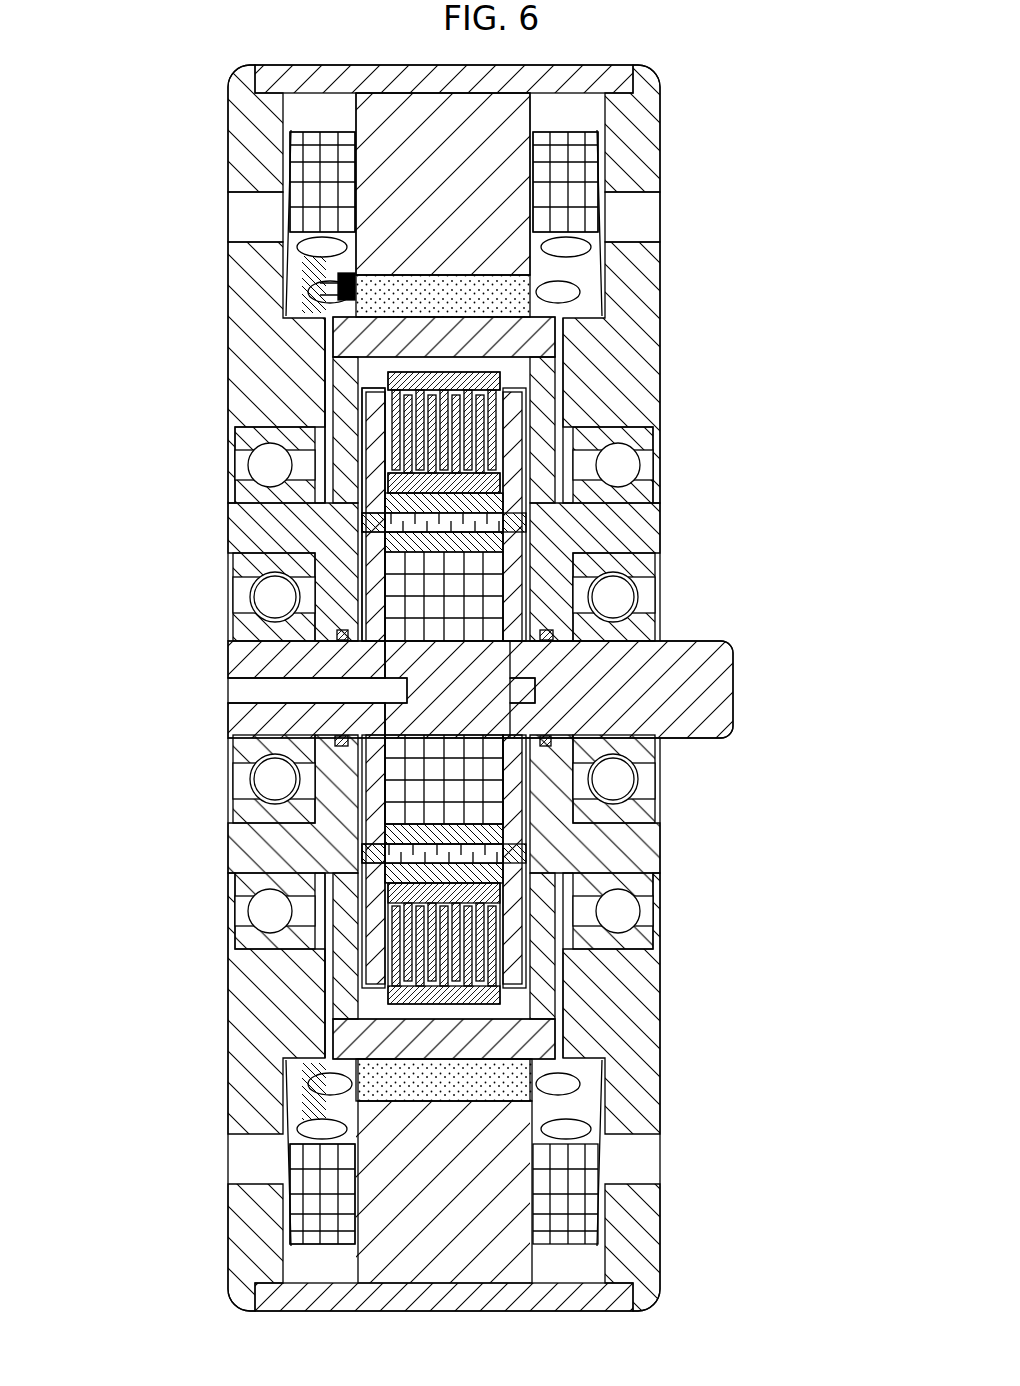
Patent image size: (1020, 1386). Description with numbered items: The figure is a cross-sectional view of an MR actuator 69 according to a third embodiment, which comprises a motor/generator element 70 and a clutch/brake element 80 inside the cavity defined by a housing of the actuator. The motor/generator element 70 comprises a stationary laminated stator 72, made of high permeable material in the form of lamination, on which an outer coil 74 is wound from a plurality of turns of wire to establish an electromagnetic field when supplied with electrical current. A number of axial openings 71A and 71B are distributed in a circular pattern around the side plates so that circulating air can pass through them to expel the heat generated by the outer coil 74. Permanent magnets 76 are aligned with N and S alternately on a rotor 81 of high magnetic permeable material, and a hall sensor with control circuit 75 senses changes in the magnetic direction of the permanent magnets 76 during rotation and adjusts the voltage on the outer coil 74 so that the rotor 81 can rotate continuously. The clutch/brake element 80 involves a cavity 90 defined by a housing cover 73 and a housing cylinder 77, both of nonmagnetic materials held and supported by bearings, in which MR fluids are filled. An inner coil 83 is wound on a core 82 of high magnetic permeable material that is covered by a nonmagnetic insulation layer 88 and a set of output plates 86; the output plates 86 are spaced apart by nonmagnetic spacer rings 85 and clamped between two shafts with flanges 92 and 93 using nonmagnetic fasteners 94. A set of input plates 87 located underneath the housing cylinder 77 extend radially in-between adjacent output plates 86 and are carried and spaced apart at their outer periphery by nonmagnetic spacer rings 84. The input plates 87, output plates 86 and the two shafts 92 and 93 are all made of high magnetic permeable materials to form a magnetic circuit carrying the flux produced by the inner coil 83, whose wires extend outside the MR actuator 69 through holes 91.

The MR actuator 69 is at (200, 126).
The motor/generator element 70 is at (284, 1195).
The axial opening 71A is at (252, 218).
The axial opening 71B is at (640, 220).
The stator 72 is at (502, 162).
The housing cover 73 is at (543, 370).
The outer coil 74 is at (323, 198).
The hall sensor with control circuit 75 is at (355, 320).
The permanent magnet 76 is at (518, 1082).
The housing cylinder 77 is at (338, 826).
The clutch/brake element 80 is at (535, 770).
The rotor 81 is at (385, 340).
The core 82 is at (493, 698).
The inner coil 83 is at (487, 795).
The nonmagnetic spacer ring 84 is at (390, 1005).
The nonmagnetic spacer ring 85 is at (500, 490).
The output plate 86 is at (480, 413).
The input plate 87 is at (493, 438).
The nonmagnetic insulation layer 88 is at (483, 880).
The cavity 90 is at (375, 870).
The hole 91 is at (392, 663).
The shaft with flange 92 is at (325, 722).
The shaft with flange 93 is at (702, 688).
The nonmagnetic fastener 94 is at (383, 524).